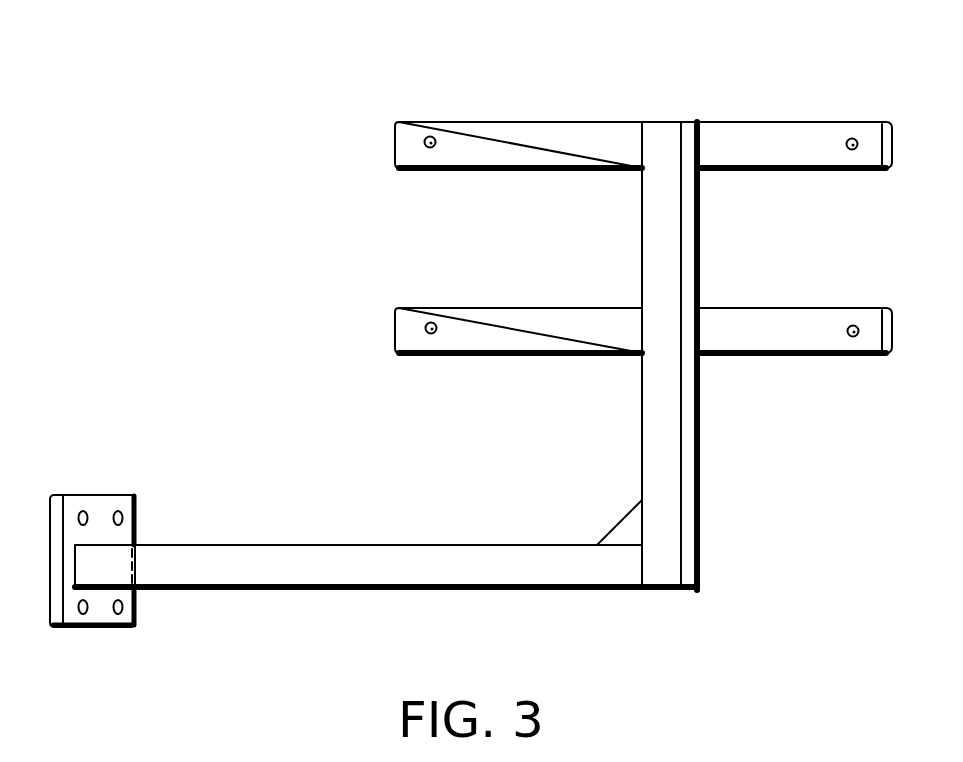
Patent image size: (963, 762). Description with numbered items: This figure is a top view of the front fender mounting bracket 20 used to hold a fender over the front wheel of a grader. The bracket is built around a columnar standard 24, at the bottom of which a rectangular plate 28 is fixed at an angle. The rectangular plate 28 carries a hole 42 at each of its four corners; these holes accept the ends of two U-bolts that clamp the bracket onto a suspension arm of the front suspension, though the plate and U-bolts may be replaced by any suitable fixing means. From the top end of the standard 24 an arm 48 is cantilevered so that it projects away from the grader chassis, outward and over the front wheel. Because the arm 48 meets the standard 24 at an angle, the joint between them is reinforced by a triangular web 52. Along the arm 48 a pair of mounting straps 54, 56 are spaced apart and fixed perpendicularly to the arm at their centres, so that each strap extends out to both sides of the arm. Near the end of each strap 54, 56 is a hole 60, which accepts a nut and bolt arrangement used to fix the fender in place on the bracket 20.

The front fender mounting bracket 20 is at (346, 92).
The columnar standard 24 is at (460, 573).
The rectangular plate 28 is at (144, 605).
The hole 42 is at (84, 510).
The arm 48 is at (694, 449).
The triangular web 52 is at (631, 520).
The mounting strap 54 is at (572, 135).
The mounting strap 56 is at (585, 328).
The hole 60 is at (430, 136).